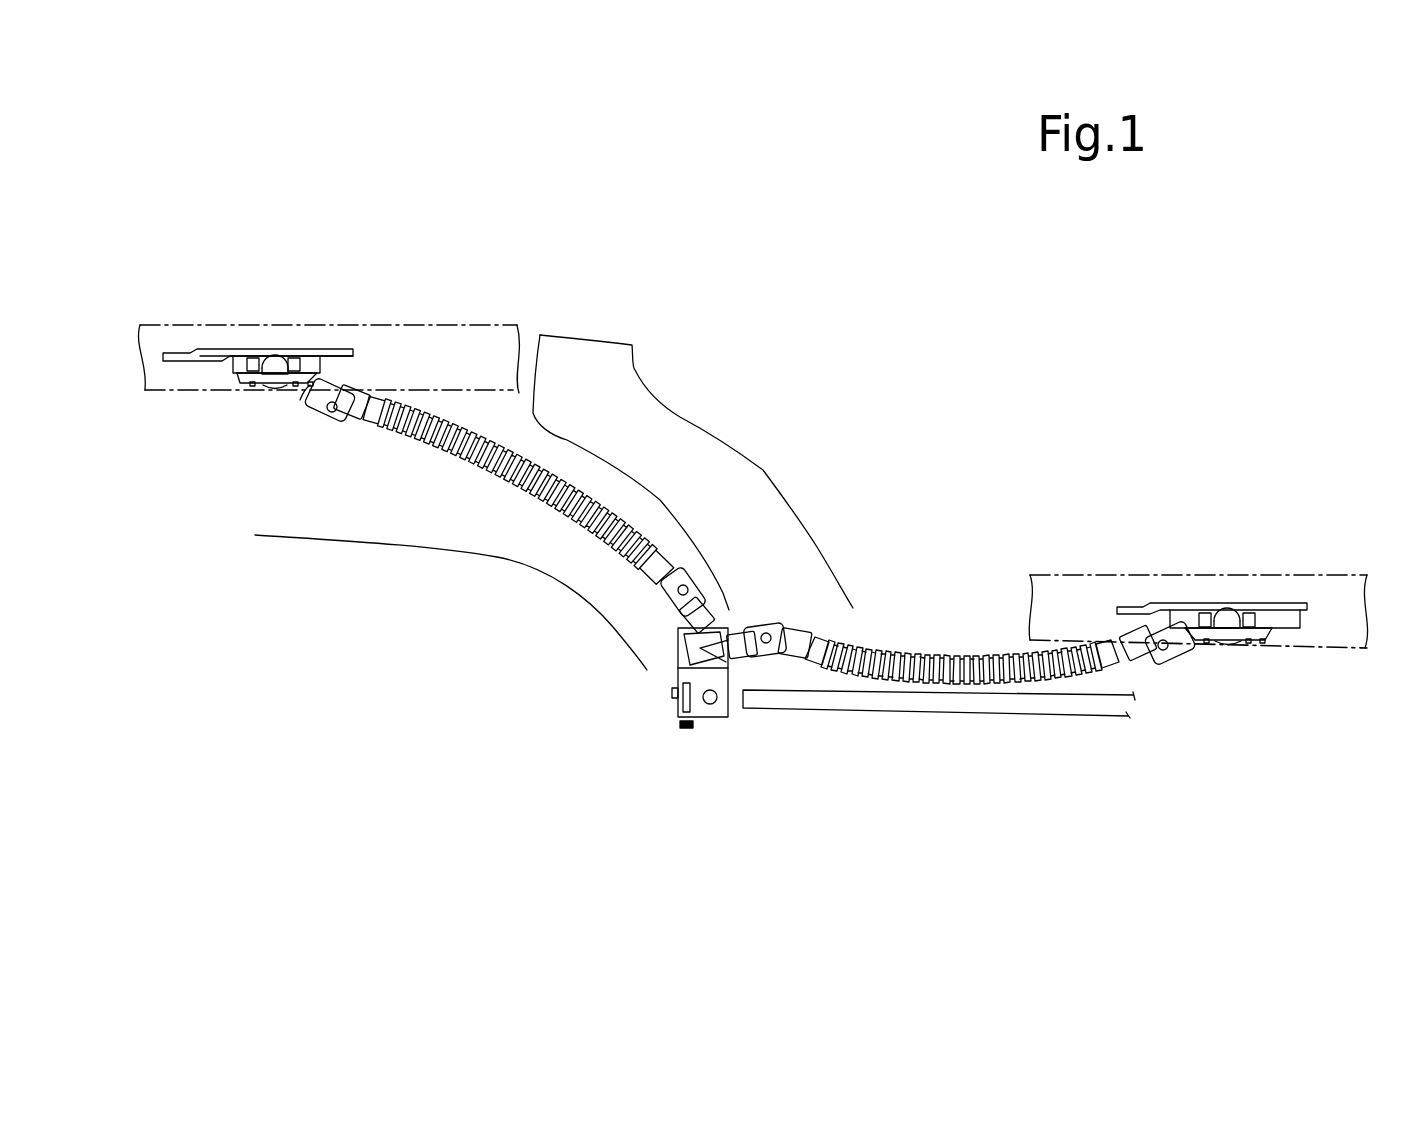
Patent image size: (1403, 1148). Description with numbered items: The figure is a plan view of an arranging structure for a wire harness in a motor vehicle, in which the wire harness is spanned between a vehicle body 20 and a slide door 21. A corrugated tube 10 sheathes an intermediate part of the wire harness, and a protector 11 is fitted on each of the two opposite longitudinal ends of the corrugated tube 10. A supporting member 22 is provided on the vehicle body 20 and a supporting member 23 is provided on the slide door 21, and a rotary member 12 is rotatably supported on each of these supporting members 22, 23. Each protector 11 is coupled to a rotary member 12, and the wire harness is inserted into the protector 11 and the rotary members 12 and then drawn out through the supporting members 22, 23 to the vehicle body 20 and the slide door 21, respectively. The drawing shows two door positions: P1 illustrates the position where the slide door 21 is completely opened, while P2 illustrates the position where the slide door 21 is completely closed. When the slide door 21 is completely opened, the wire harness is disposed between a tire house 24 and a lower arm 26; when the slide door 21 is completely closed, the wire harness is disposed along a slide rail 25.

The corrugated tube 10 is at (523, 480).
The protector 11 is at (353, 417).
The rotary member 12 is at (303, 397).
The vehicle body 20 is at (695, 589).
The slide door 21 is at (752, 429).
The supporting member 22 is at (710, 730).
The supporting member 23 is at (234, 360).
The tire house 24 is at (393, 560).
The slide rail 25 is at (933, 705).
The lower arm 26 is at (685, 433).
The completely opened position P1 is at (328, 302).
The completely closed position P2 is at (1093, 585).